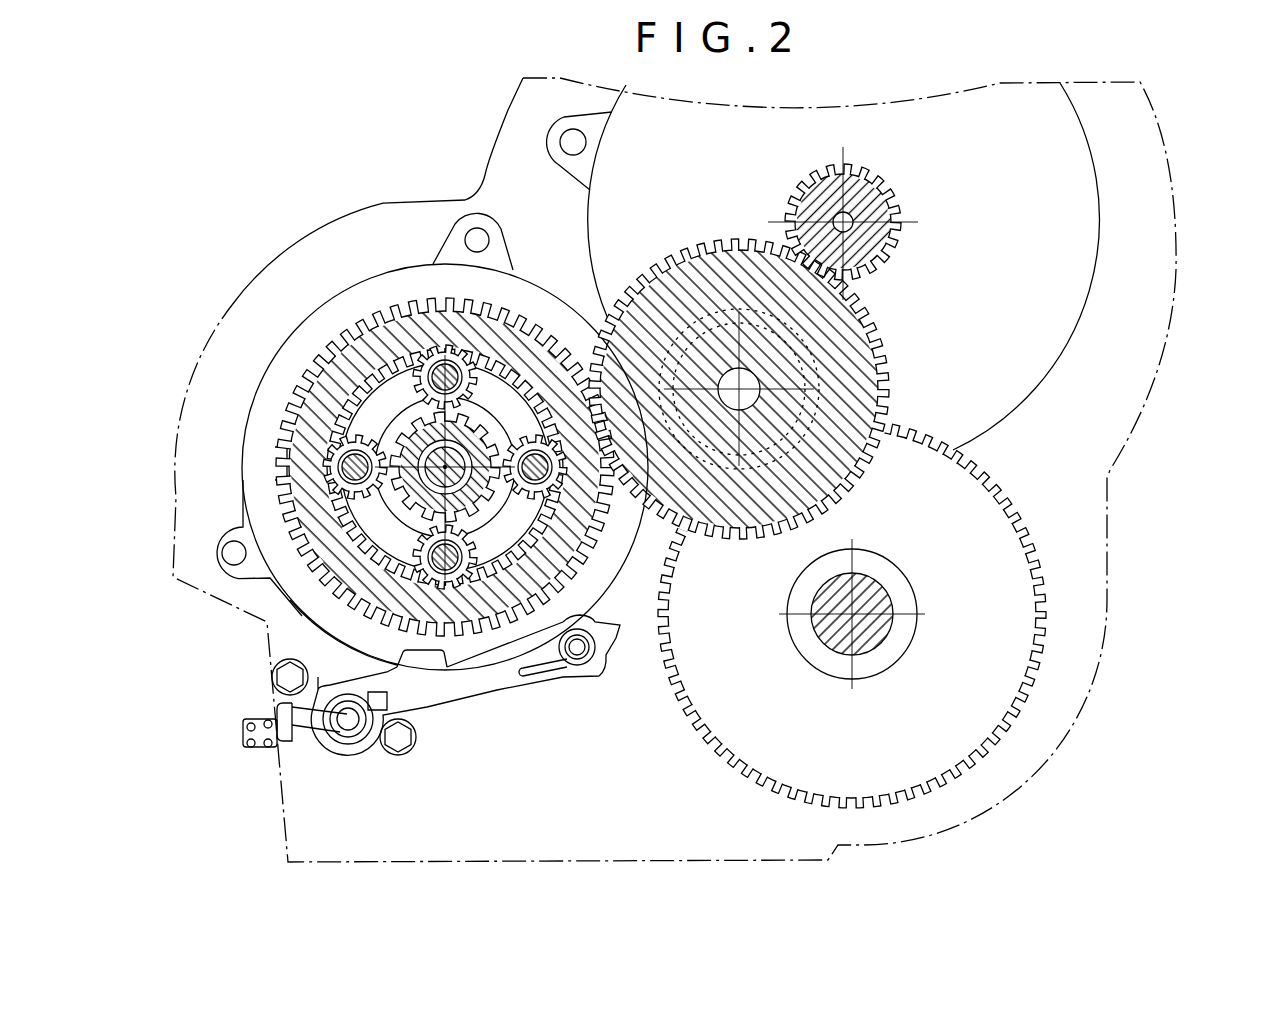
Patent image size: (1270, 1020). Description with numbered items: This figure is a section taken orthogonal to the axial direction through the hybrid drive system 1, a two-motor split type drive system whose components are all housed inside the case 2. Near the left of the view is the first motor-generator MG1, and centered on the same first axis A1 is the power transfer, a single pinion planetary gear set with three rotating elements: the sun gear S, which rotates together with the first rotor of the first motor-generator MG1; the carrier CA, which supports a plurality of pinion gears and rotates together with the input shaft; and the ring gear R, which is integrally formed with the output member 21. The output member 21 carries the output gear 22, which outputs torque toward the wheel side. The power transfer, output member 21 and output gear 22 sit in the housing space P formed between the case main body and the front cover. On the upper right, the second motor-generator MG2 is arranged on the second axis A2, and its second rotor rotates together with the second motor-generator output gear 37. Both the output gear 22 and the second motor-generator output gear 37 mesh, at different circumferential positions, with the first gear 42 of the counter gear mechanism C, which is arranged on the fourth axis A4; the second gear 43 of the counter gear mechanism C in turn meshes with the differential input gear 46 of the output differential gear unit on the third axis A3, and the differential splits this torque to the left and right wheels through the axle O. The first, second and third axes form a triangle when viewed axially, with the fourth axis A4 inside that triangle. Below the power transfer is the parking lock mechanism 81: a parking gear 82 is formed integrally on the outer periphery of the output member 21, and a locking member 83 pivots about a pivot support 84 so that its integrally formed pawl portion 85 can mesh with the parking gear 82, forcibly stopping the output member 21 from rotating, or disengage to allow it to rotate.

The hybrid drive system 1 is at (255, 192).
The case 2 is at (230, 303).
The first motor-generator MG1 is at (344, 290).
The second motor-generator MG2 is at (1098, 227).
The housing space P is at (400, 418).
The output member 21 is at (300, 445).
The output gear 22 is at (323, 582).
The carrier CA is at (368, 408).
The ring gear R is at (503, 373).
The sun gear S is at (425, 518).
The first axis A1 is at (422, 492).
The pawl portion 85 is at (397, 662).
The parking gear 82 is at (423, 627).
The parking lock mechanism 81 is at (490, 703).
The locking member 83 is at (518, 685).
The pivot support 84 is at (584, 660).
The counter gear mechanism C is at (787, 335).
The second axis A2 is at (840, 218).
The second motor-generator output gear 37 is at (890, 192).
The second gear 43 is at (690, 303).
The fourth axis A4 is at (728, 368).
The first gear 42 is at (890, 380).
The differential input gear 46 is at (1010, 503).
The third axis A3 is at (820, 589).
The axle O is at (905, 572).